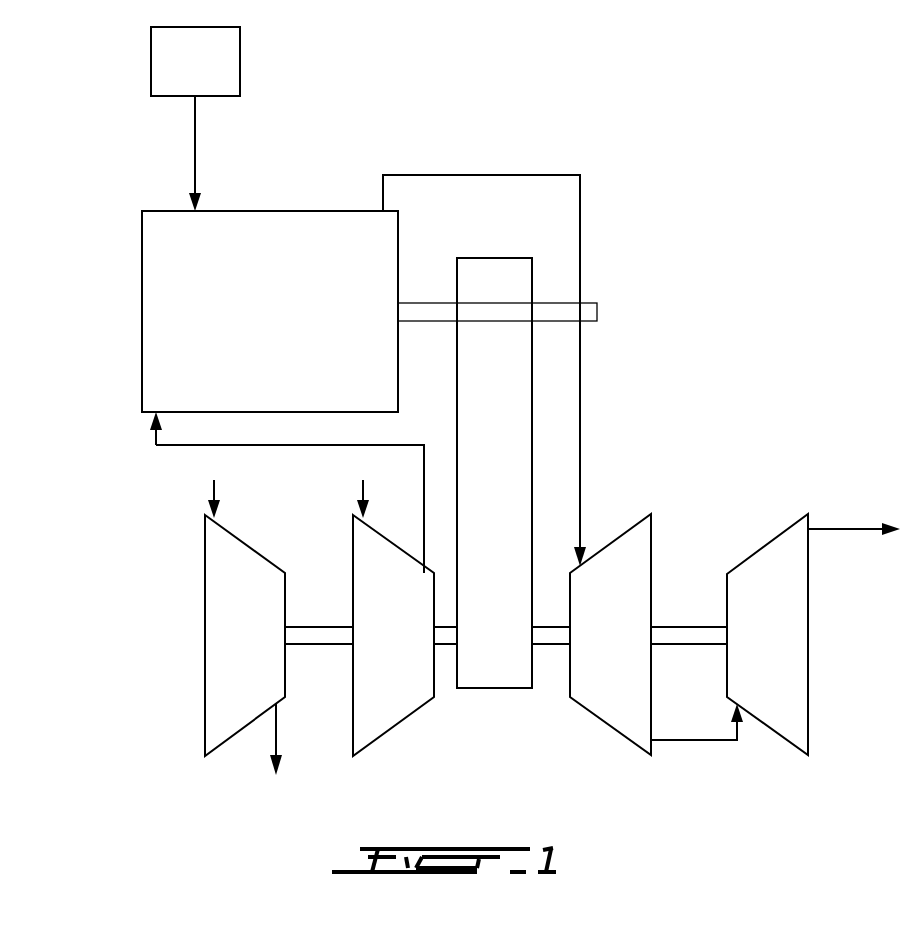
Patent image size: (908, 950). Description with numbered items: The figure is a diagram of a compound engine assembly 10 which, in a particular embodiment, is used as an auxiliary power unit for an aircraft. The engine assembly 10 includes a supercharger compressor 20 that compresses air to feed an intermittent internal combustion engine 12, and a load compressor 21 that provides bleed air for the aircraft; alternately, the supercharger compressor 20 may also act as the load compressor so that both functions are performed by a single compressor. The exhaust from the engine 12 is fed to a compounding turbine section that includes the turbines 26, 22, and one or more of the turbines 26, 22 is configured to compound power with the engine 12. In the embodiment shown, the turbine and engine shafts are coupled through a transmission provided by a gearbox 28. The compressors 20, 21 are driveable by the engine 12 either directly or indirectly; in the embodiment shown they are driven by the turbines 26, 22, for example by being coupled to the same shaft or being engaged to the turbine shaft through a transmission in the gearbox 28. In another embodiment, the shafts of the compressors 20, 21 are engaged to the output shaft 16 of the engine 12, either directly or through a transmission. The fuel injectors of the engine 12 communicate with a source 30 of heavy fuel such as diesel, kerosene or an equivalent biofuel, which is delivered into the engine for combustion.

The compound engine assembly 10 is at (696, 130).
The intermittent internal combustion engine 12 is at (302, 225).
The output shaft 16 is at (424, 310).
The supercharger compressor 20 is at (378, 712).
The load compressor 21 is at (230, 712).
The turbine 22 is at (782, 710).
The turbine 26 is at (628, 553).
The gearbox 28 is at (514, 280).
The source 30 is at (220, 57).